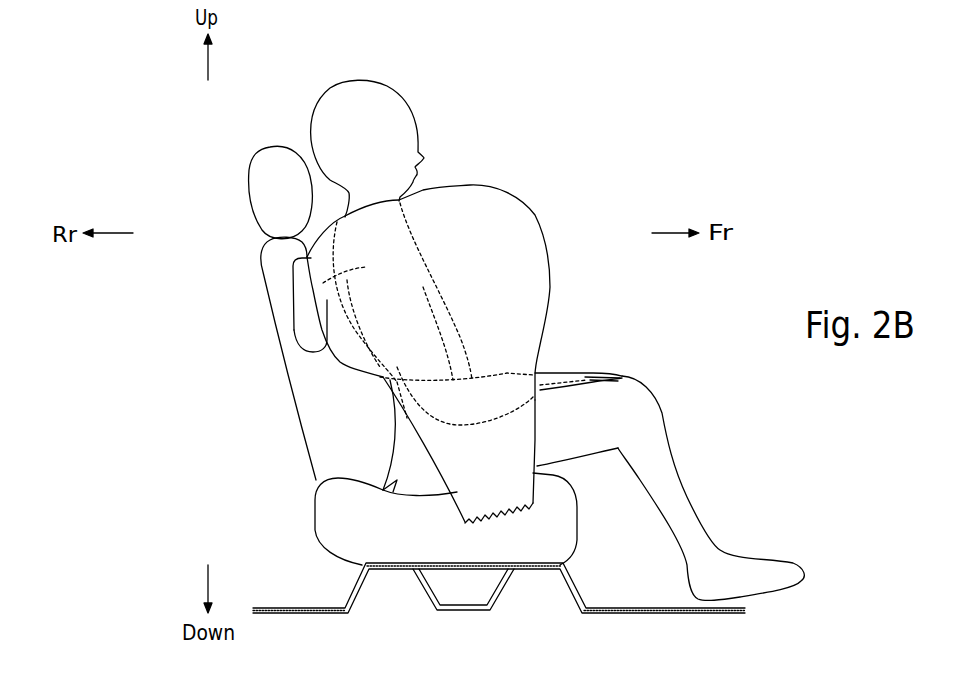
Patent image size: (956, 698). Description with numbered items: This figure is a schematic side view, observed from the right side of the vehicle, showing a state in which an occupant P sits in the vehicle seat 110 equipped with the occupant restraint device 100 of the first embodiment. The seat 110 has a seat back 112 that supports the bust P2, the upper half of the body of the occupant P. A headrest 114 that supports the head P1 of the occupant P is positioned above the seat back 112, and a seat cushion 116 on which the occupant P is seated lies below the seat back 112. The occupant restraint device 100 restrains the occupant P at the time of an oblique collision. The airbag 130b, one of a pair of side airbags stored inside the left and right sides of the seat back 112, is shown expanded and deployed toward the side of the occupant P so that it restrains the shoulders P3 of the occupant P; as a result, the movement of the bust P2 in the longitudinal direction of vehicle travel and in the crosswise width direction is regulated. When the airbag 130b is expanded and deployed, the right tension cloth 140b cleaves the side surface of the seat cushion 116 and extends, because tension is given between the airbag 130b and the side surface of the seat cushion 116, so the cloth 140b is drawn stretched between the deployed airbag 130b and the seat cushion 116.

The occupant restraint device 100 is at (536, 139).
The vehicle seat 110 is at (231, 263).
The seat back 112 is at (318, 397).
The headrest 114 is at (261, 181).
The seat cushion 116 is at (537, 541).
The airbag 130b is at (473, 373).
The right tension cloth 140b is at (510, 448).
The occupant P is at (325, 76).
The head P1 is at (312, 127).
The bust P2 is at (400, 453).
The shoulders P3 is at (323, 283).